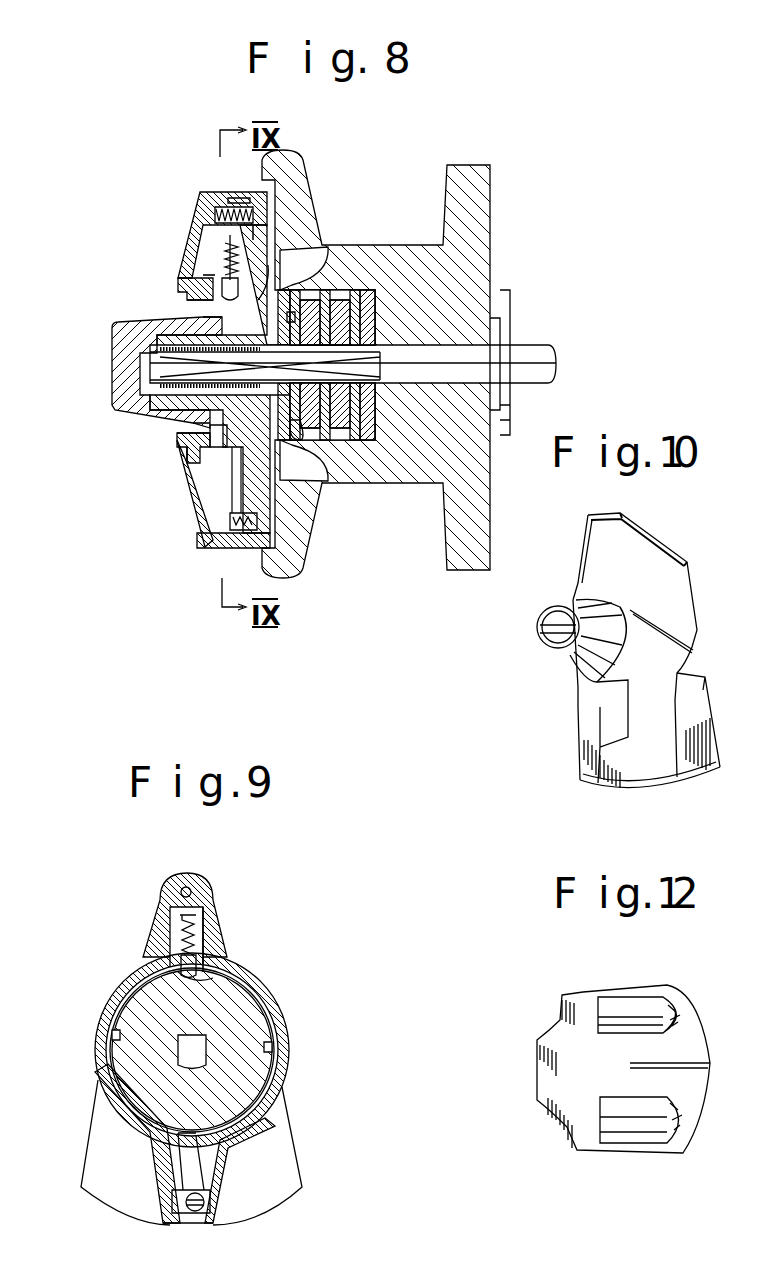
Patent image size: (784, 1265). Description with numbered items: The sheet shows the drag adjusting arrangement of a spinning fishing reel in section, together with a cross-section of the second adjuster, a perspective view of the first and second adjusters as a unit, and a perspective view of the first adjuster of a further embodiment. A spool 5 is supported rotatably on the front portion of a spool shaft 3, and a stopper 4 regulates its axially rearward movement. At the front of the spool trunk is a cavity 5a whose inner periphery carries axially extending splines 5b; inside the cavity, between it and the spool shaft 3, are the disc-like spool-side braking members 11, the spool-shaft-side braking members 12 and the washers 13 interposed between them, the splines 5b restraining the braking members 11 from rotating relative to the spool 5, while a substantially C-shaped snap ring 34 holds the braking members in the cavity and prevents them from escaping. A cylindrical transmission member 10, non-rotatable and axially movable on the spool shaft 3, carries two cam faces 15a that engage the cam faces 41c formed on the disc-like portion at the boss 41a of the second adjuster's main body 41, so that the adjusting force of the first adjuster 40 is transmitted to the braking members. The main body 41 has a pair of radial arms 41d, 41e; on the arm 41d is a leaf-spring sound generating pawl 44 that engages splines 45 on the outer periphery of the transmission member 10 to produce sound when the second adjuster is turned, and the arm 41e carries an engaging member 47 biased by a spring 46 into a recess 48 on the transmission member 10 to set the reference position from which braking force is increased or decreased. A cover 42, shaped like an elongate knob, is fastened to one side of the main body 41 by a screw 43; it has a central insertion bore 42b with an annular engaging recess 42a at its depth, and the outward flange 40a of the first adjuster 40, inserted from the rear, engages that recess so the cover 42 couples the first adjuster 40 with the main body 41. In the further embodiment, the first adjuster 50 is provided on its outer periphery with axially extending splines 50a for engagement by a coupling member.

In FIG. 8, the spool shaft 3 is at (532, 348).
In FIG. 8, the stopper 4 is at (508, 305).
In FIG. 8, the spool 5 is at (498, 214).
In FIG. 8, the cavity 5a is at (373, 315).
In FIG. 8, the splines 5b is at (355, 293).
In FIG. 8, the transmission member 10 is at (205, 320).
In FIG. 9, the transmission member 10 is at (253, 1033).
In FIG. 8, the spool-side braking members 11 is at (385, 445).
In FIG. 8, the spool-shaft-side braking members 12 is at (348, 442).
In FIG. 8, the washers 13 is at (355, 442).
In FIG. 8, the cam faces 15a is at (203, 277).
In FIG. 8, the snap ring 34 is at (292, 442).
In FIG. 8, the first adjuster 40 is at (112, 388).
In FIG. 10, the first adjuster 40 is at (560, 606).
In FIG. 8, the outward flange 40a is at (200, 473).
In FIG. 8, the main body 41 is at (268, 237).
In FIG. 9, the main body 41 is at (286, 1008).
In FIG. 8, the boss 41a is at (292, 275).
In FIG. 8, the cam faces 41c is at (187, 300).
In FIG. 8, the arm 41d is at (240, 552).
In FIG. 9, the arm 41d is at (213, 1162).
In FIG. 8, the arm 41e is at (270, 222).
In FIG. 9, the arm 41e is at (213, 920).
In FIG. 8, the cover 42 is at (200, 227).
In FIG. 10, the cover 42 is at (668, 572).
In FIG. 9, the cover 42 is at (228, 886).
In FIG. 8, the engaging recess 42a is at (182, 450).
In FIG. 8, the insertion bore 42b is at (177, 433).
In FIG. 10, the insertion bore 42b is at (622, 617).
In FIG. 8, the screw 43 is at (238, 196).
In FIG. 9, the screw 43 is at (188, 877).
In FIG. 8, the sound generating pawl 44 is at (250, 493).
In FIG. 9, the sound generating pawl 44 is at (197, 1145).
In FIG. 8, the splines 45 is at (230, 473).
In FIG. 9, the splines 45 is at (277, 1047).
In FIG. 8, the spring 46 is at (227, 253).
In FIG. 9, the spring 46 is at (200, 935).
In FIG. 8, the engaging member 47 is at (225, 285).
In FIG. 9, the engaging member 47 is at (198, 962).
In FIG. 8, the recess 48 is at (270, 283).
In FIG. 9, the recess 48 is at (213, 978).
In FIG. 12, the first adjuster 50 is at (693, 1007).
In FIG. 12, the splines 50a is at (650, 1127).